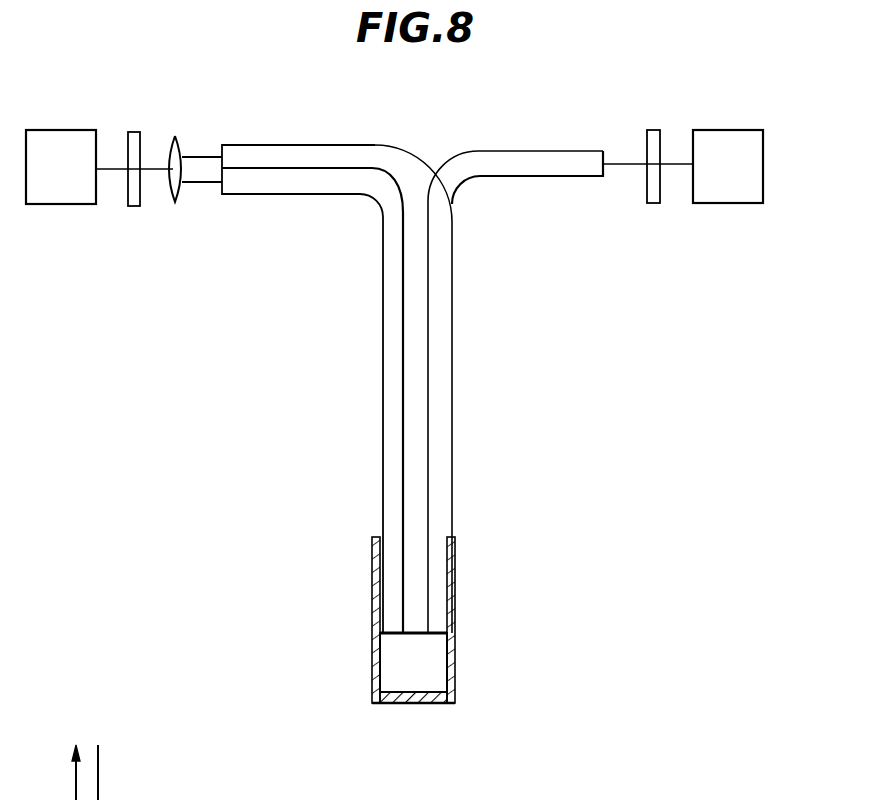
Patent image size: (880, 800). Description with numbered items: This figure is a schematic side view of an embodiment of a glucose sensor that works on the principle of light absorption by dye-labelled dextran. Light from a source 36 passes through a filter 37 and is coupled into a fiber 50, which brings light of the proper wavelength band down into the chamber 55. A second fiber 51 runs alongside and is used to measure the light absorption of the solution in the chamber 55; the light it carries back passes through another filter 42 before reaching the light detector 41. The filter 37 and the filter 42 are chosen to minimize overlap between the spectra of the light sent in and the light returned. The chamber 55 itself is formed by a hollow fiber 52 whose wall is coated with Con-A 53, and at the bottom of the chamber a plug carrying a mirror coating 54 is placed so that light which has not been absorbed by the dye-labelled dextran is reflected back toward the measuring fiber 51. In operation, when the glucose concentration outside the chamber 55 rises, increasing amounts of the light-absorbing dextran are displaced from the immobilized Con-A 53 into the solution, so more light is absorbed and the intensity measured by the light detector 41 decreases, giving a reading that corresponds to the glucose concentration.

The source 36 is at (59, 197).
The filter 37 is at (131, 207).
The light detector 41 is at (739, 188).
The filter 42 is at (654, 190).
The fiber 50 is at (390, 433).
The fiber 51 is at (417, 569).
The hollow fiber 52 is at (455, 645).
The Con-A 53 is at (455, 668).
The mirror coating 54 is at (403, 705).
The chamber 55 is at (408, 658).